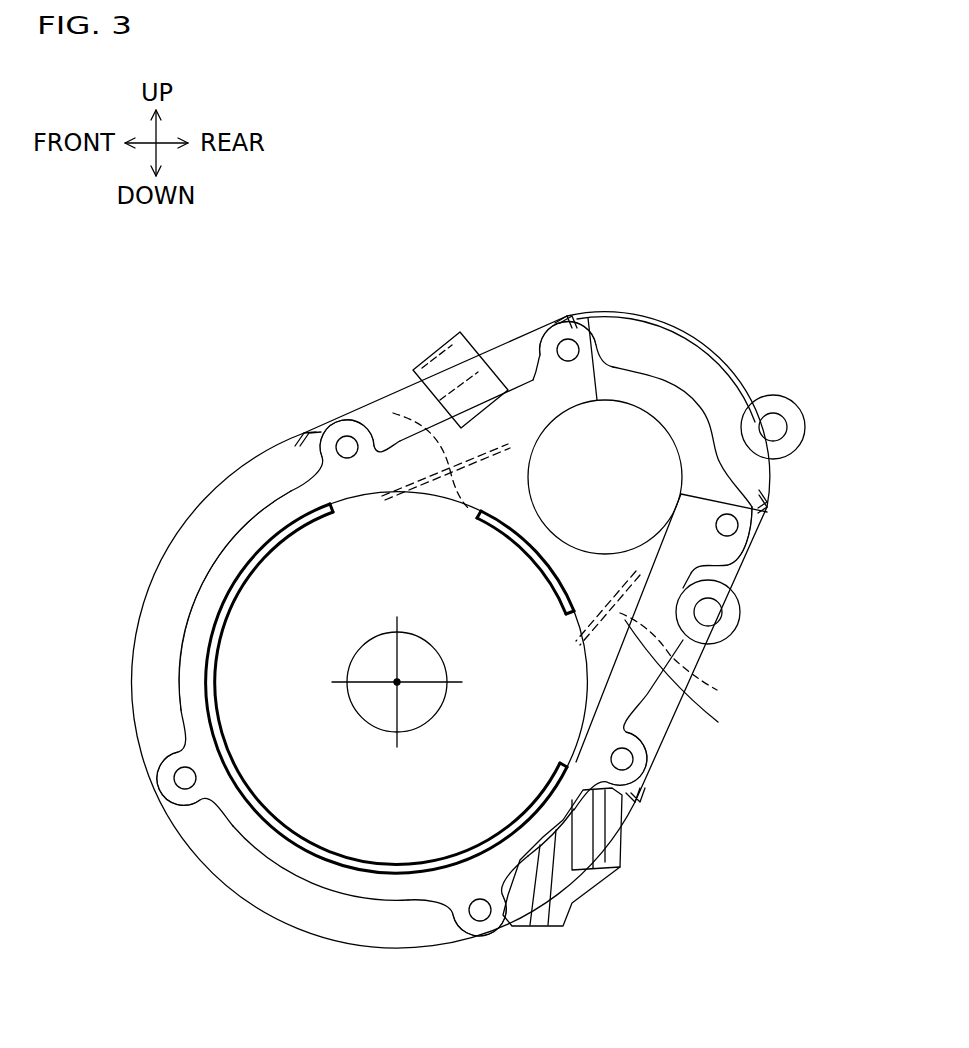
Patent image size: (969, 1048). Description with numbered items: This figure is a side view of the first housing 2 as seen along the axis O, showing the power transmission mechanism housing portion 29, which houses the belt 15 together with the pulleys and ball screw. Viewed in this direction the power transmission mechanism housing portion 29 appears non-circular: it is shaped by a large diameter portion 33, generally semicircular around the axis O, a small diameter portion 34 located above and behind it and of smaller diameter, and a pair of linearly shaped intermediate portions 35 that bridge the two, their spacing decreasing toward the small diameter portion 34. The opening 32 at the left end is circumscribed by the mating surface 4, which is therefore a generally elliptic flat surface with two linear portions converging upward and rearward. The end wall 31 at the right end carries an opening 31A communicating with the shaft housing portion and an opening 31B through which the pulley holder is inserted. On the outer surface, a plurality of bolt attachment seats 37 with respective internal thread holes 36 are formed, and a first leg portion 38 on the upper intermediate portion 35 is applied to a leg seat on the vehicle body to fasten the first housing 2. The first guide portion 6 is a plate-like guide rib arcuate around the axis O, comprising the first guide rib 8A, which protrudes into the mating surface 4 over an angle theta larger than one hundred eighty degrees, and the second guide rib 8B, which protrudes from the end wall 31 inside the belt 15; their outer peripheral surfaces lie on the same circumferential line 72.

The first housing 2 is at (399, 343).
The mating surface 4 is at (663, 355).
The first guide portion 6 is at (562, 857).
The first guide rib 8A is at (412, 868).
The second guide rib 8B is at (524, 556).
The belt 15 is at (718, 692).
The power transmission mechanism housing portion 29 is at (230, 533).
The end wall 31 is at (343, 825).
The opening 31A is at (428, 707).
The opening 31B is at (650, 393).
The opening 32 is at (700, 706).
The large diameter portion 33 is at (207, 871).
The small diameter portion 34 is at (718, 360).
The intermediate portions 35 is at (703, 654).
The internal thread holes 36 is at (347, 447).
The bolt attachment seats 37 is at (330, 427).
The first leg portion 38 is at (460, 333).
The circumferential line 72 is at (393, 413).
The axis O is at (397, 682).
The angle theta is at (131, 640).